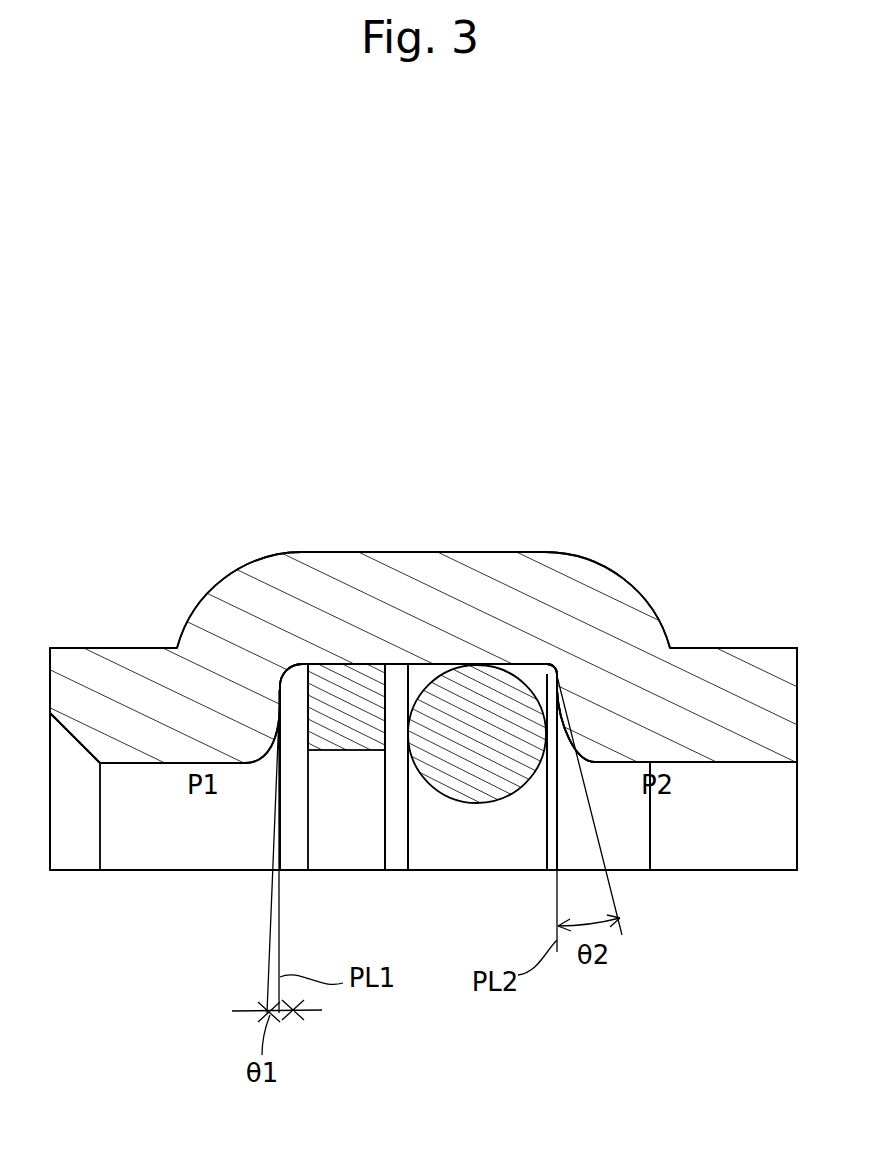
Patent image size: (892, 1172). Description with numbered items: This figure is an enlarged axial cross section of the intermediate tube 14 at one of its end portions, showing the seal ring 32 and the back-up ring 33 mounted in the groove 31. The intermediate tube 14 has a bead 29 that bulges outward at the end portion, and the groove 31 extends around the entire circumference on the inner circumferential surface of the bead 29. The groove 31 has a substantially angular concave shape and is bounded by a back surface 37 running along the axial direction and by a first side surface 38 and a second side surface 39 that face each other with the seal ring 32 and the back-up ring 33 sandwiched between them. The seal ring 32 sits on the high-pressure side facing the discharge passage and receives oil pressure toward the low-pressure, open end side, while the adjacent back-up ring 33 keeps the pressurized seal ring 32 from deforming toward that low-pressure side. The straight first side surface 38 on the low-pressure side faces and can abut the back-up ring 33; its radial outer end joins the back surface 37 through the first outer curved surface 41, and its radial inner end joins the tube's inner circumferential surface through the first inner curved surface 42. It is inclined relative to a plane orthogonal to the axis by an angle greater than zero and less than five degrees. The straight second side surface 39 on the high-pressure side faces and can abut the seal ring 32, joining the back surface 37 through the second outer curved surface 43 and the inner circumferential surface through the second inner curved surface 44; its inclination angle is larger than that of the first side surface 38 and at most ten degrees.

The intermediate tube 14 is at (750, 663).
The bead 29 is at (502, 573).
The groove 31 is at (433, 670).
The seal ring 32 is at (487, 690).
The back-up ring 33 is at (345, 672).
The back surface 37 is at (408, 663).
The first side surface 38 is at (188, 628).
The second side surface 39 is at (563, 690).
The first outer curved surface 41 is at (303, 664).
The first inner curved surface 42 is at (292, 713).
The second outer curved surface 43 is at (532, 670).
The second inner curved surface 44 is at (552, 722).